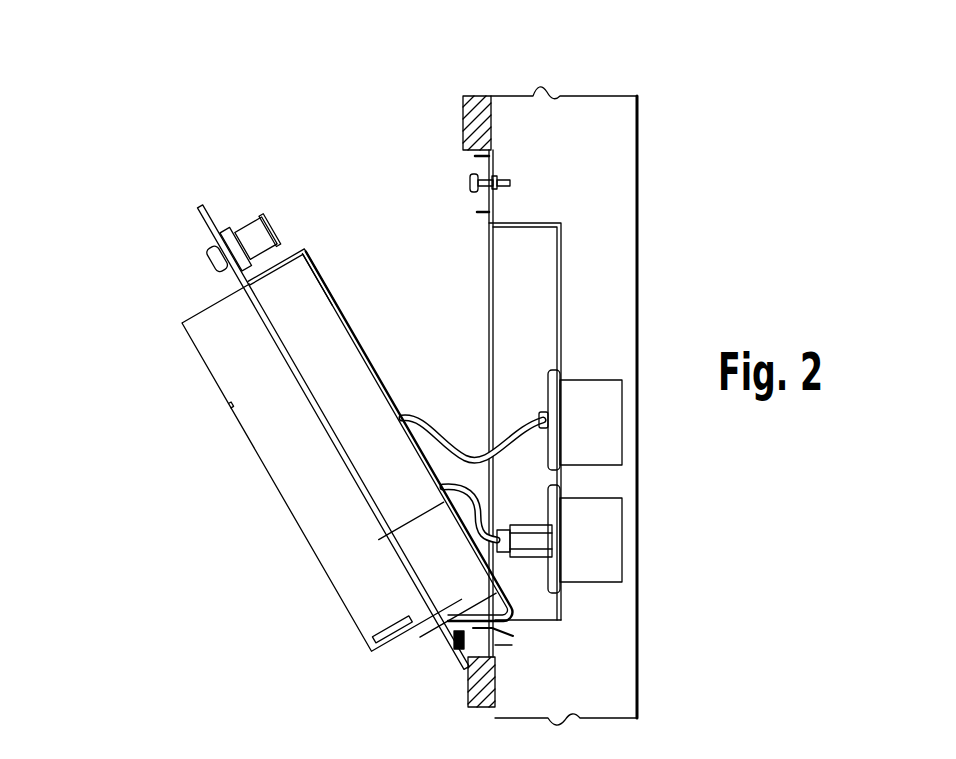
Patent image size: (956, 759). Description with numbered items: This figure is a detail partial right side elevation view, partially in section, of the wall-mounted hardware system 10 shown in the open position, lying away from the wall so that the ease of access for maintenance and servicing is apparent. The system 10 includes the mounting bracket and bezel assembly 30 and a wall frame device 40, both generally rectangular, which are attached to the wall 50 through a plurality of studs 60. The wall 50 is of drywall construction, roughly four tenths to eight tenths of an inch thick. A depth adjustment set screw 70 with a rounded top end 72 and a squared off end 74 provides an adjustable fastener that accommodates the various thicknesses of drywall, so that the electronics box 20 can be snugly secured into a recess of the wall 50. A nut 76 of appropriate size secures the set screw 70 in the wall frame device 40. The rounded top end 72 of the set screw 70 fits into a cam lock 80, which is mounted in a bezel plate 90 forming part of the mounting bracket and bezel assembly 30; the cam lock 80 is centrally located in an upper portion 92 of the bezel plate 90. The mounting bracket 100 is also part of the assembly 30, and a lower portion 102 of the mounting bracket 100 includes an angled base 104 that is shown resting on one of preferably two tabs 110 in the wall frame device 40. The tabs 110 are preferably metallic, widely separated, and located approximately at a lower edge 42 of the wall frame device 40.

The wall-mounted hardware system 10 is at (298, 106).
The electronics box 20 is at (241, 432).
The mounting bracket and bezel assembly 30 is at (318, 241).
The wall frame device 40 is at (488, 244).
The lower edge 42 is at (496, 661).
The wall 50 is at (463, 97).
The studs 60 is at (646, 139).
The depth adjustment set screw 70 is at (502, 180).
The rounded top end 72 is at (470, 177).
The squared off end 74 is at (510, 183).
The nut 76 is at (495, 188).
The cam lock 80 is at (212, 256).
The bezel plate 90 is at (227, 283).
The upper portion 92 is at (200, 207).
The mounting bracket 100 is at (360, 336).
The lower portion 102 is at (510, 600).
The angled base 104 is at (466, 618).
The tabs 110 is at (496, 646).